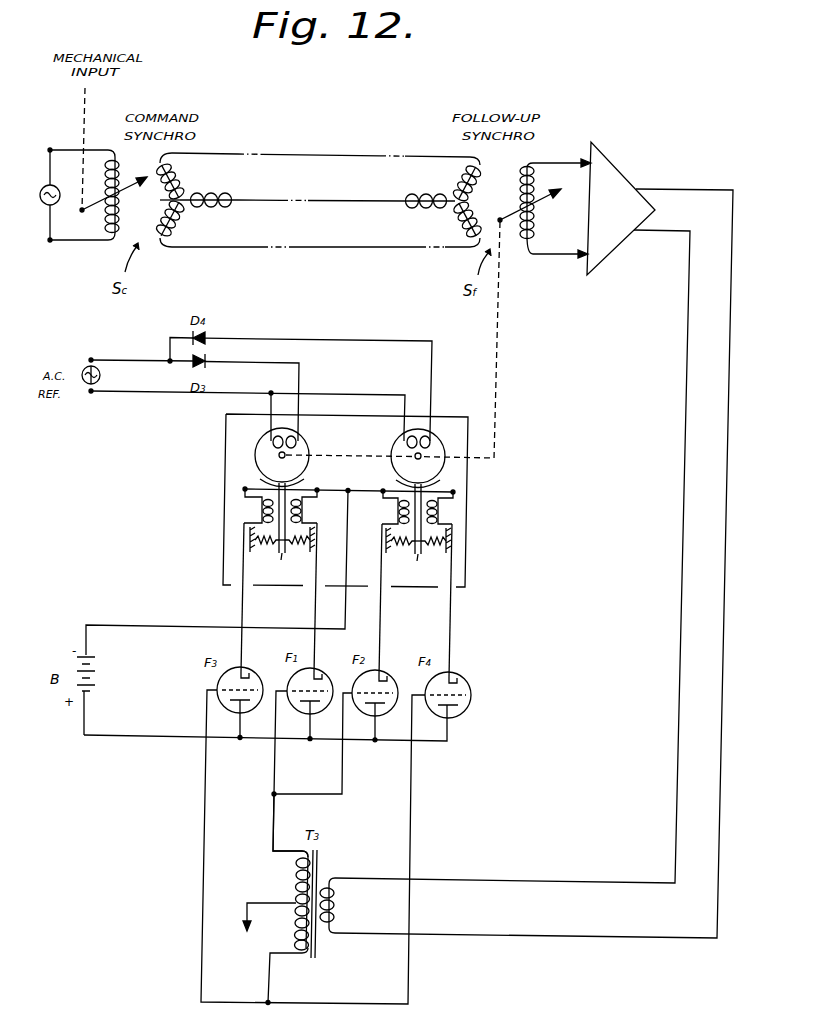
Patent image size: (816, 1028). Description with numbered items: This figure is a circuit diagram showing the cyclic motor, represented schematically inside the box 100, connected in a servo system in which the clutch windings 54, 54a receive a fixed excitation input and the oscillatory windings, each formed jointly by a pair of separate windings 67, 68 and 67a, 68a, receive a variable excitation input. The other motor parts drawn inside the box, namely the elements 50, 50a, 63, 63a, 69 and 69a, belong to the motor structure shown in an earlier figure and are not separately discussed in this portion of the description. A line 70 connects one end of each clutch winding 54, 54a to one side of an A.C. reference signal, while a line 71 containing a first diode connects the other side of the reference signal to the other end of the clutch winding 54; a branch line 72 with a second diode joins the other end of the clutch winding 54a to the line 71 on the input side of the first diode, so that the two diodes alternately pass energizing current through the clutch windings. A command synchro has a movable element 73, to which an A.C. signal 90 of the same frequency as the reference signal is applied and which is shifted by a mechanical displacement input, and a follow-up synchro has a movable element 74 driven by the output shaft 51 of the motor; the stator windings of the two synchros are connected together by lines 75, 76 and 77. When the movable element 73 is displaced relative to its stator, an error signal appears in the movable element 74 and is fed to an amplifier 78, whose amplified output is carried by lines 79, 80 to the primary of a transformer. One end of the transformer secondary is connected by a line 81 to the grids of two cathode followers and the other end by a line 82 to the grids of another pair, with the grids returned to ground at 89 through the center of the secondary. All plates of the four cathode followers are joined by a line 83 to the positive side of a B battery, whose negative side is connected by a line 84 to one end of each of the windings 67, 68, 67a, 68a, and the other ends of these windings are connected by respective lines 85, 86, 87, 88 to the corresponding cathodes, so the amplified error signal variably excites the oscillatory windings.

The A.C. signal 90 is at (46, 188).
The movable element of command synchro 73 is at (95, 209).
The line 77 is at (356, 146).
The line 76 is at (355, 200).
The line 75 is at (330, 247).
The movable element of follow-up synchro 74 is at (509, 214).
The amplifier 78 is at (622, 172).
The line 79 is at (686, 437).
The line 80 is at (729, 437).
The line 71 is at (131, 361).
The branch line 72 is at (356, 340).
The line 70 is at (140, 393).
The cyclic motor 100 is at (225, 478).
The rotary device (motor/drum) 50 is at (251, 447).
The clutch winding 54 is at (284, 432).
The output shaft 51 is at (354, 455).
The rotary device (motor/drum) 50a is at (445, 471).
The clutch winding 54a is at (418, 433).
The winding 67 is at (262, 510).
The winding 68 is at (301, 510).
The spring and stop 69 is at (267, 544).
The pointer arm 63 is at (282, 557).
The winding 67a is at (398, 511).
The winding 68a is at (437, 511).
The spring and stop 69a is at (403, 545).
The pointer arm 63a is at (418, 559).
The line 85 is at (240, 605).
The line 86 is at (313, 605).
The line 87 is at (381, 611).
The line 88 is at (450, 619).
The line 84 is at (155, 626).
The line 83 is at (147, 737).
The line 81 is at (273, 823).
The line 82 is at (267, 980).
The return to ground 89 is at (259, 903).